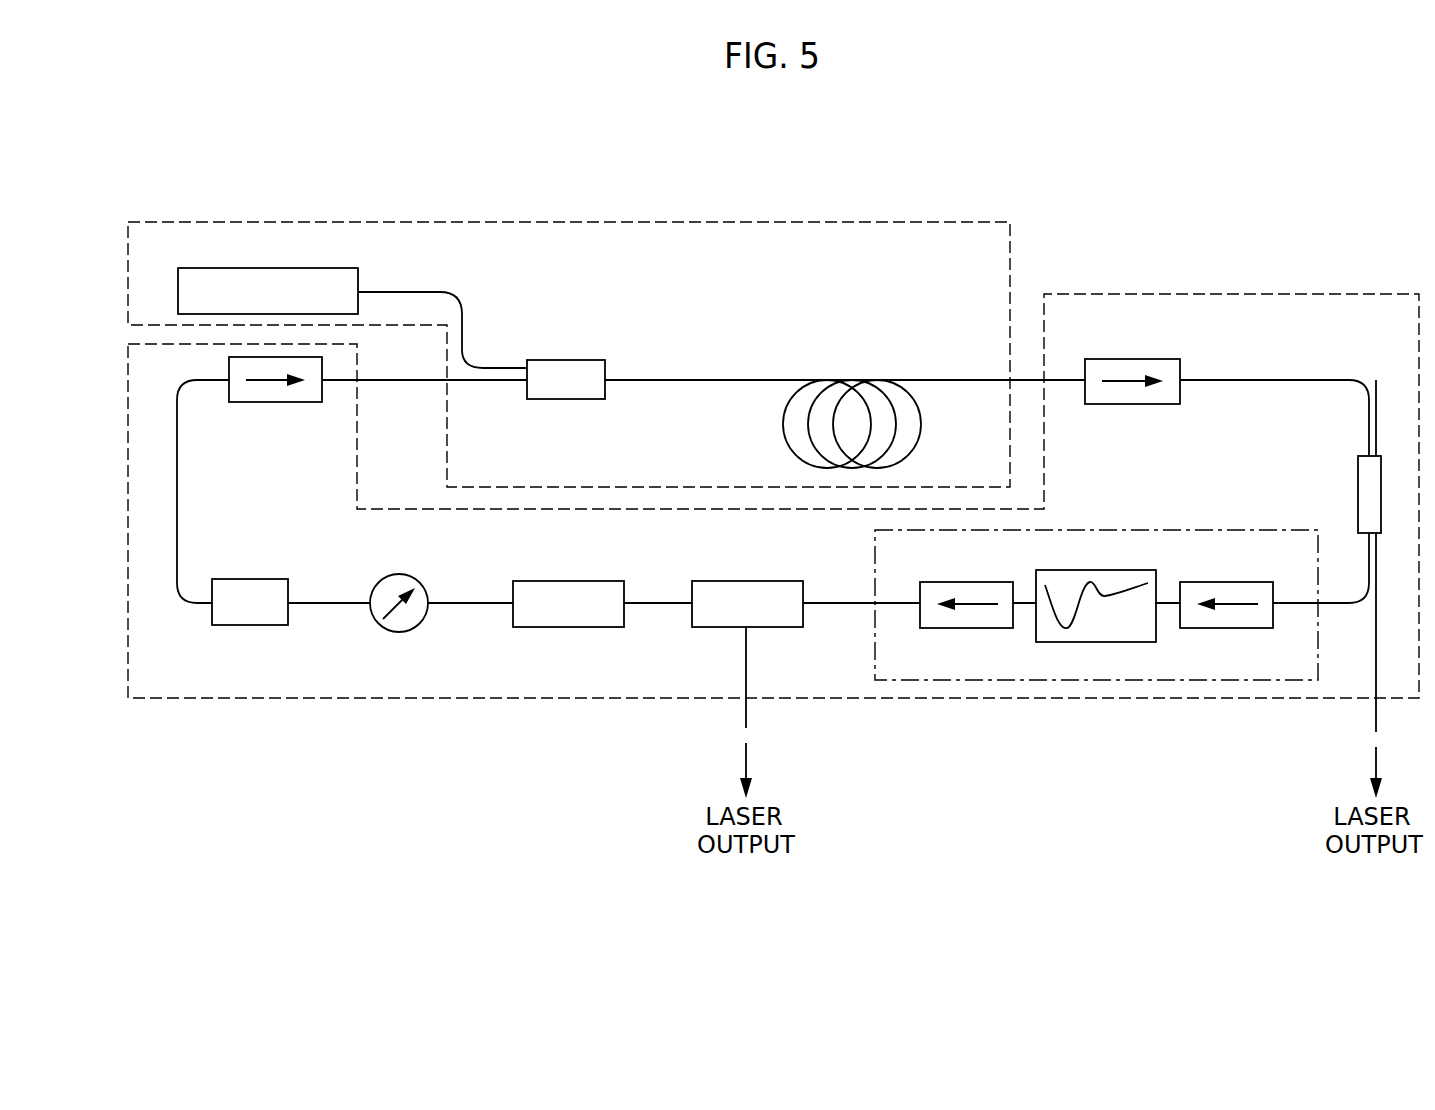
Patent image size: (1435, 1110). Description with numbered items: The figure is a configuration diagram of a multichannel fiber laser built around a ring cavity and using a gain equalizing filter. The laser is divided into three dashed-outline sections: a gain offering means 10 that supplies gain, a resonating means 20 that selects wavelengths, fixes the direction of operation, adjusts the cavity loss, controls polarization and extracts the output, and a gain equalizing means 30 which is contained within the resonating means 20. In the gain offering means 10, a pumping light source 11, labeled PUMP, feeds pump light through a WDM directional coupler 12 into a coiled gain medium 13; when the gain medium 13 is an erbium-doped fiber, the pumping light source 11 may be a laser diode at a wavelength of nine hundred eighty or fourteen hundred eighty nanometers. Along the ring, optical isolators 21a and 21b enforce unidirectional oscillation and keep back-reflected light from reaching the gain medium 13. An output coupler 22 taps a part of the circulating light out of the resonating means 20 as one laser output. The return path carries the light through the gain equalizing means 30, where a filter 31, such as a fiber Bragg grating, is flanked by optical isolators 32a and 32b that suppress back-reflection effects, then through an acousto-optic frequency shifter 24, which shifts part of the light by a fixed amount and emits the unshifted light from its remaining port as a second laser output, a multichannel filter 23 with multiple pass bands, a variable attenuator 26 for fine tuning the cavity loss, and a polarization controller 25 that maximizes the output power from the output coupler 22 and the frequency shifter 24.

The gain offering means 10 is at (953, 223).
The pumping light source 11 is at (320, 268).
The WDM directional coupler 12 is at (568, 360).
The gain medium 13 is at (783, 428).
The resonating means 20 is at (1365, 294).
The optical isolator 21a is at (257, 402).
The optical isolator 21b is at (1120, 359).
The output coupler 22 is at (1358, 480).
The multichannel filter 23 is at (587, 581).
The acousto-optic frequency shifter 24 is at (765, 581).
The polarization controller 25 is at (252, 579).
The variable attenuator 26 is at (402, 575).
The gain equalizing means 30 is at (1262, 530).
The filter 31 is at (1110, 570).
The optical isolator 32a is at (960, 582).
The optical isolator 32b is at (1220, 582).